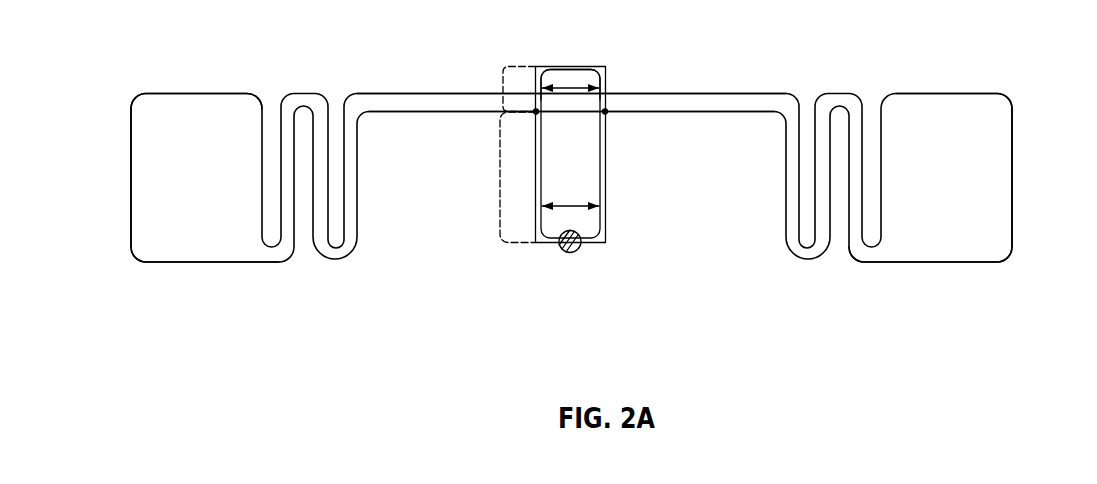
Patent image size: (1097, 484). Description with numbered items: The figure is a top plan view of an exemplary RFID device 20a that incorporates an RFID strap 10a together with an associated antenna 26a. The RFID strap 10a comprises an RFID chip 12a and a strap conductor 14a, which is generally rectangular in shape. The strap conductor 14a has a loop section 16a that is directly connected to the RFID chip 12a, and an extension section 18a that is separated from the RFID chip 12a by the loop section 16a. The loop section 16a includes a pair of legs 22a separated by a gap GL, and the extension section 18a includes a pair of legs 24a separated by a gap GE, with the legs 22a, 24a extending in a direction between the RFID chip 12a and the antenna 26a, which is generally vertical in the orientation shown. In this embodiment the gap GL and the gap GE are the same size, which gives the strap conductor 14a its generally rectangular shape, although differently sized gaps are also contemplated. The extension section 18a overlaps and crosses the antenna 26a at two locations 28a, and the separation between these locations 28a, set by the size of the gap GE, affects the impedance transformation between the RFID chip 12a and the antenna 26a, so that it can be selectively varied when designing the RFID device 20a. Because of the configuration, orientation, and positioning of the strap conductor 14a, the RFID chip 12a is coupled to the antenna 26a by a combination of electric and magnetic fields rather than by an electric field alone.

The RFID strap 10a is at (600, 258).
The RFID chip 12a is at (572, 253).
The strap conductor 14a is at (609, 229).
The loop section 16a is at (502, 179).
The extension section 18a is at (503, 89).
The RFID device 20a is at (1029, 107).
The legs of the loop section 22a is at (541, 163).
The legs of the extension section 24a is at (603, 88).
The antenna 26a is at (785, 89).
The locations 28a is at (536, 109).
The gap between the legs of the extension section GE is at (605, 114).
The gap between the legs of the loop section GL is at (557, 212).